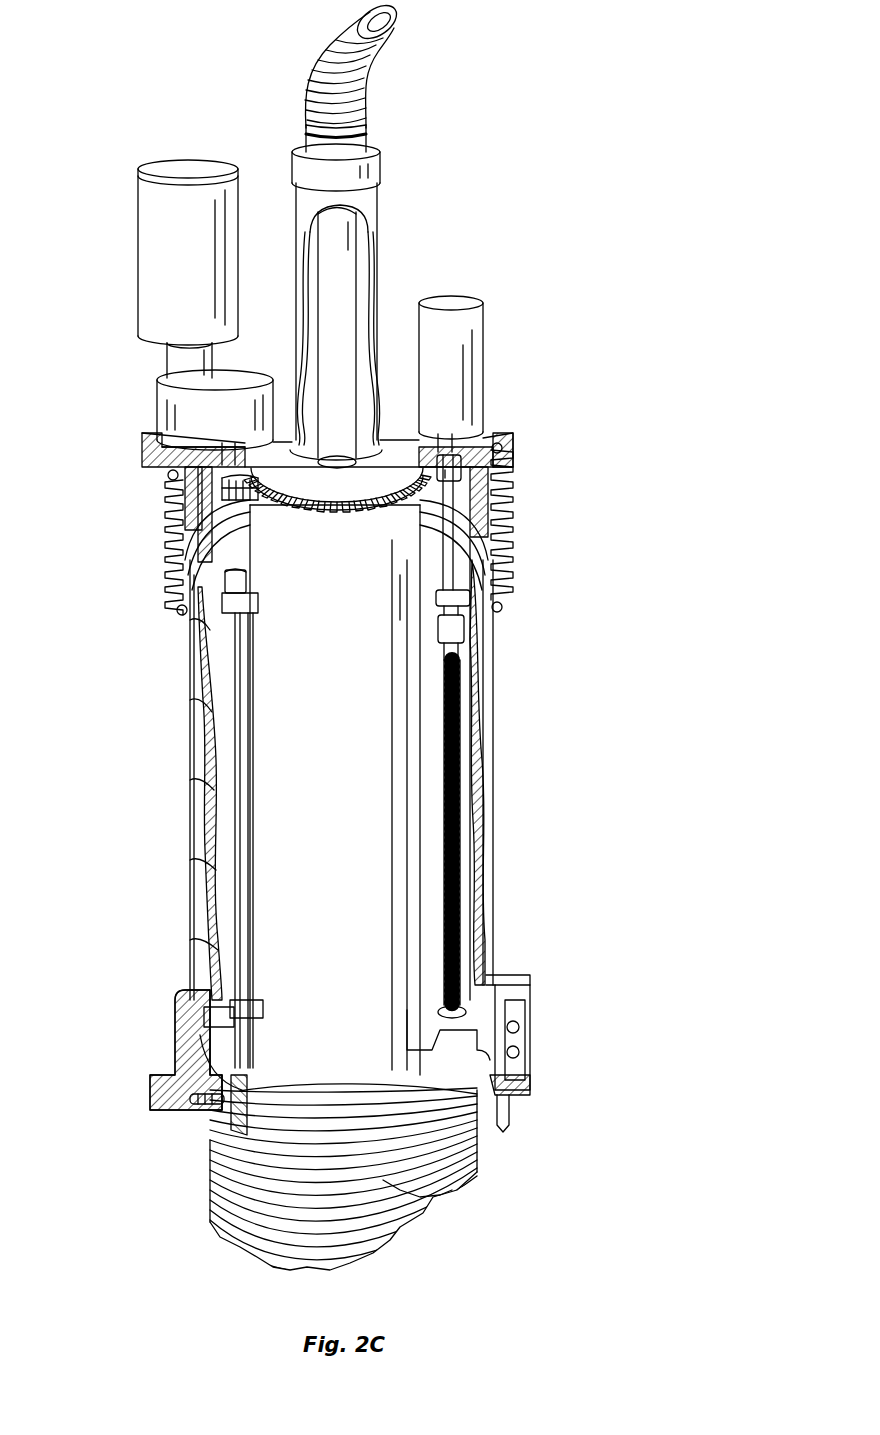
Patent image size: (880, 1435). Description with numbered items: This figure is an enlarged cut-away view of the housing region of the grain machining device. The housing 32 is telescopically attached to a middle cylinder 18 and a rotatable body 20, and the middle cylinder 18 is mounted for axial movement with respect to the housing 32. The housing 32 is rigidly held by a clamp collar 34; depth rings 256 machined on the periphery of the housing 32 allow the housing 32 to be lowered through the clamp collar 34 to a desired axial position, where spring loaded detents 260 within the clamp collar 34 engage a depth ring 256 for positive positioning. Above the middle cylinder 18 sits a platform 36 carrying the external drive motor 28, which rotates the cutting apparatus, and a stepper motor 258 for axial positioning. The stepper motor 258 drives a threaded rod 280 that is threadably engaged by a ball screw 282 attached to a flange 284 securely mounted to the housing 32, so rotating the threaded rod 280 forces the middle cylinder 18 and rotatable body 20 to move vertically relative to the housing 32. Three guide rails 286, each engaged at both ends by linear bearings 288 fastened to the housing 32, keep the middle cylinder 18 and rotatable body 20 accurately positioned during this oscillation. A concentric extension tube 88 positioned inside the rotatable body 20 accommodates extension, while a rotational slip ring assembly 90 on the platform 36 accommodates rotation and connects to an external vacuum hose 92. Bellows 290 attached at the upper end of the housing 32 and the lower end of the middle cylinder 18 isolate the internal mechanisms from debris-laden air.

The middle cylinder 18 is at (360, 885).
The rotatable body 20 is at (490, 935).
The external drive motor 28 is at (157, 166).
The housing 32 is at (205, 910).
The clamp collar 34 is at (163, 1080).
The platform 36 is at (398, 412).
The concentric extension tube 88 is at (335, 247).
The rotational slip ring assembly 90 is at (378, 170).
The external vacuum hose 92 is at (392, 30).
The depth ring 256 is at (197, 758).
The stepper motor 258 is at (456, 385).
The spring loaded detents 260 is at (200, 1115).
The threaded rod 280 is at (455, 726).
The ball screw 282 is at (453, 620).
The flange 284 is at (462, 598).
The guide rails 286 is at (232, 665).
The linear bearings 288 is at (235, 602).
The bellows 290 is at (515, 516).